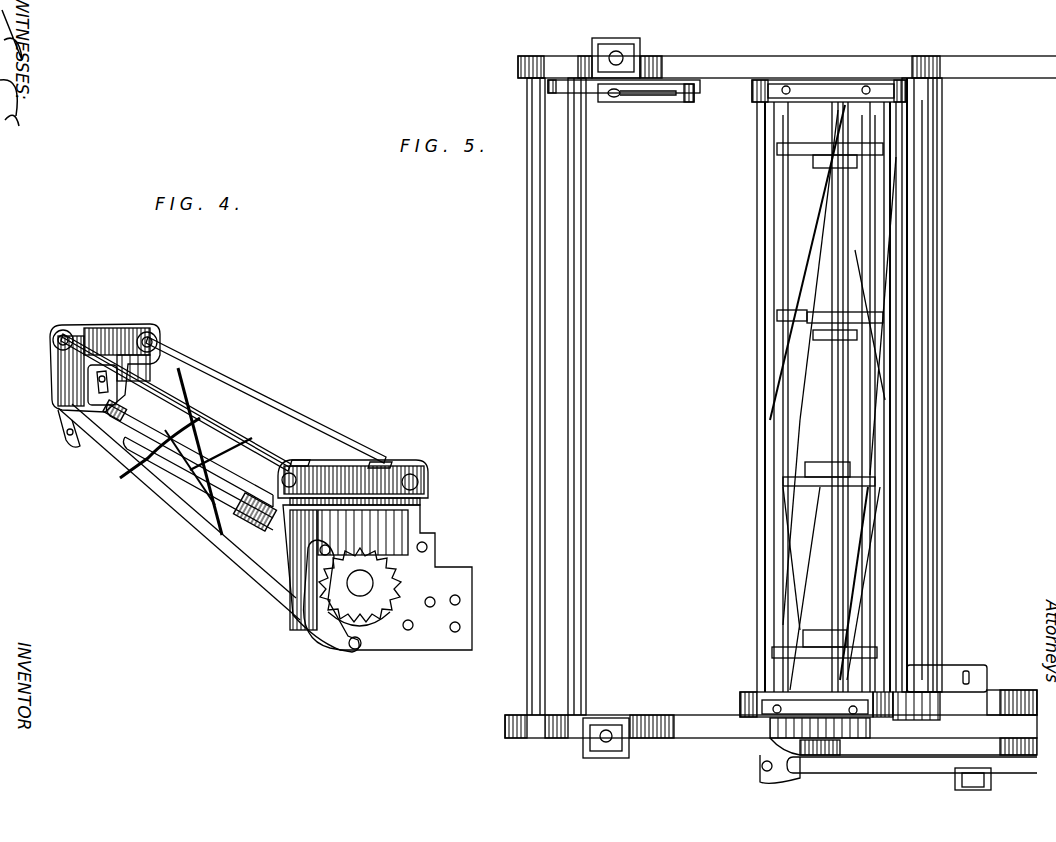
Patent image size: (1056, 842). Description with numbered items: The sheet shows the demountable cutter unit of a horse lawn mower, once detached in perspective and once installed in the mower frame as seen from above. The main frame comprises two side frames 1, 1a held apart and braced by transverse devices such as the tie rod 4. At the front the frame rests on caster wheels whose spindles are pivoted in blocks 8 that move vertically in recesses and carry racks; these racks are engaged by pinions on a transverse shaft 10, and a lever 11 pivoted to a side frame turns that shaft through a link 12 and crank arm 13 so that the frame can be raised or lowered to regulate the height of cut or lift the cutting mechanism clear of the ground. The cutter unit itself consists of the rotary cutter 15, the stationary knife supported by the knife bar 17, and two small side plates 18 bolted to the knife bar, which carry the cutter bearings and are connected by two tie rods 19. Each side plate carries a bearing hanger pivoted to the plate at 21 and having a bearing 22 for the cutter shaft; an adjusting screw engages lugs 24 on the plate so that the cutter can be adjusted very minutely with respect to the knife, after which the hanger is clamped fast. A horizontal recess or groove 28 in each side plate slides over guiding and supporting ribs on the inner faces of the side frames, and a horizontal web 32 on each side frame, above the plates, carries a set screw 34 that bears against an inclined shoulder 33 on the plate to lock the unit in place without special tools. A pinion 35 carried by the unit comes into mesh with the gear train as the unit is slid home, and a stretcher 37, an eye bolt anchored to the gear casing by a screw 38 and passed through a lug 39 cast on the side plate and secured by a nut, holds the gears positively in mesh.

In FIG. 5, the side frame 1 is at (670, 724).
In FIG. 5, the side frame 1a is at (722, 70).
In FIG. 5, the tie rod 4 is at (527, 436).
In FIG. 5, the block 8 is at (628, 50).
In FIG. 5, the transverse shaft 10 is at (586, 256).
In FIG. 5, the lever 11 is at (666, 98).
In FIG. 5, the link 12 is at (646, 102).
In FIG. 5, the crank arm 13 is at (555, 82).
In FIG. 5, the rotary cutter 15 is at (757, 426).
In FIG. 4, the rotary cutter 15 is at (150, 514).
In FIG. 5, the knife bar 17 is at (928, 404).
In FIG. 5, the side plate 18 is at (760, 96).
In FIG. 4, the side plate 18 is at (56, 370).
In FIG. 5, the tie rod 19 is at (757, 350).
In FIG. 4, the tie rod 19 is at (195, 420).
In FIG. 4, the pivot 21 is at (428, 540).
In FIG. 4, the bearing 22 is at (92, 390).
In FIG. 4, the lug 24 is at (66, 440).
In FIG. 4, the recess or groove 28 is at (420, 502).
In FIG. 5, the web 32 is at (845, 86).
In FIG. 4, the inclined shoulder 33 is at (392, 462).
In FIG. 5, the set screw 34 is at (790, 86).
In FIG. 4, the pinion 35 is at (388, 632).
In FIG. 5, the stretcher 37 is at (880, 768).
In FIG. 5, the screw 38 is at (991, 779).
In FIG. 5, the lug 39 is at (760, 778).
In FIG. 4, the lug 39 is at (310, 634).